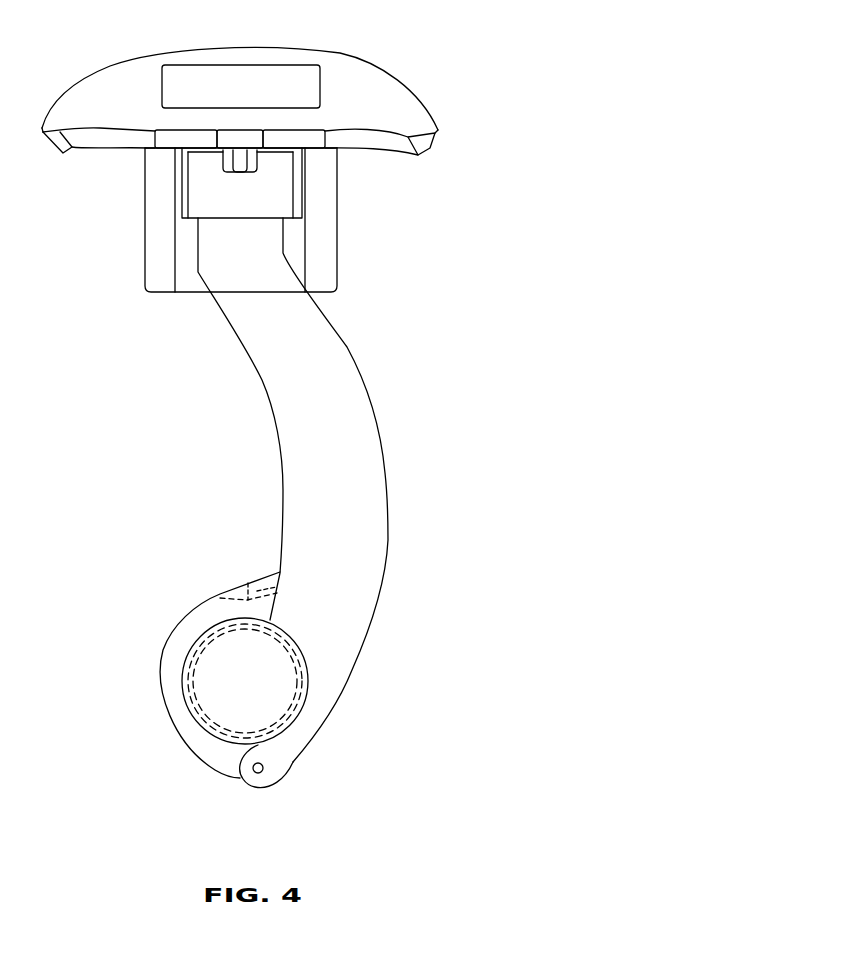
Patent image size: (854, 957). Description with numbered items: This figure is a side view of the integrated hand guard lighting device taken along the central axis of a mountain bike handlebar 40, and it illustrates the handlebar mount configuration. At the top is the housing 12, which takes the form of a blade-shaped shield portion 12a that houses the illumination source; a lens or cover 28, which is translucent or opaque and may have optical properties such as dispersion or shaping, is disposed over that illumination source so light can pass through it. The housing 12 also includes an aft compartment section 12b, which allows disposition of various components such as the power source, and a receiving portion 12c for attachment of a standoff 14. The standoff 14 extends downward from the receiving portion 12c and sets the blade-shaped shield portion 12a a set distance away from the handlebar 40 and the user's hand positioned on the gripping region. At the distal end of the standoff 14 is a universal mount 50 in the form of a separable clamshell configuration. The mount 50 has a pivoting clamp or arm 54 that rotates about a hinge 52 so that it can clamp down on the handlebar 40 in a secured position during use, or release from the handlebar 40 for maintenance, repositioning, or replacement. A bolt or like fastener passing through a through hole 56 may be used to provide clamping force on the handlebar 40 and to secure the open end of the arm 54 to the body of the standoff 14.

The housing 12 is at (284, 80).
The blade-shaped shield portion 12a is at (410, 88).
The aft compartment section 12b is at (145, 278).
The receiving portion 12c is at (195, 172).
The cover 28 is at (277, 72).
The standoff 14 is at (338, 504).
The universal mount 50 is at (192, 655).
The pivoting clamp arm 54 is at (177, 622).
The through hole 56 is at (248, 593).
The handlebar 40 is at (192, 710).
The hinge 52 is at (264, 770).